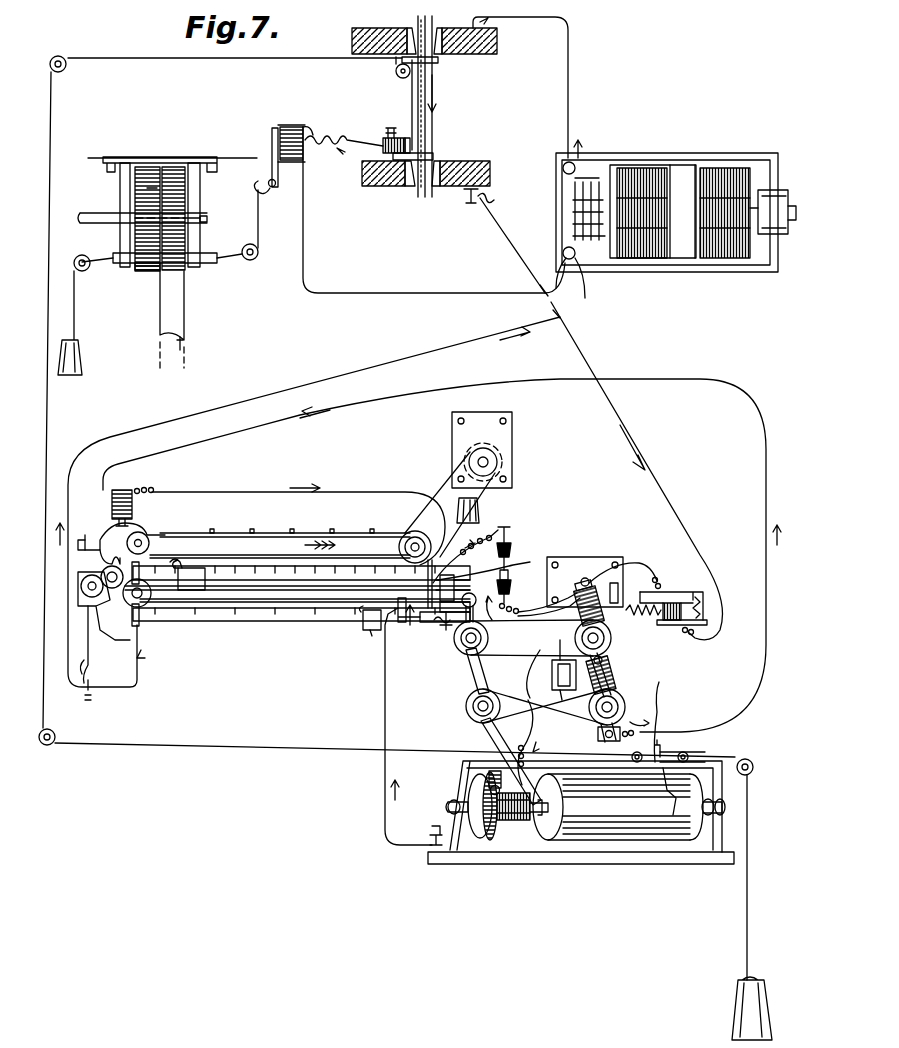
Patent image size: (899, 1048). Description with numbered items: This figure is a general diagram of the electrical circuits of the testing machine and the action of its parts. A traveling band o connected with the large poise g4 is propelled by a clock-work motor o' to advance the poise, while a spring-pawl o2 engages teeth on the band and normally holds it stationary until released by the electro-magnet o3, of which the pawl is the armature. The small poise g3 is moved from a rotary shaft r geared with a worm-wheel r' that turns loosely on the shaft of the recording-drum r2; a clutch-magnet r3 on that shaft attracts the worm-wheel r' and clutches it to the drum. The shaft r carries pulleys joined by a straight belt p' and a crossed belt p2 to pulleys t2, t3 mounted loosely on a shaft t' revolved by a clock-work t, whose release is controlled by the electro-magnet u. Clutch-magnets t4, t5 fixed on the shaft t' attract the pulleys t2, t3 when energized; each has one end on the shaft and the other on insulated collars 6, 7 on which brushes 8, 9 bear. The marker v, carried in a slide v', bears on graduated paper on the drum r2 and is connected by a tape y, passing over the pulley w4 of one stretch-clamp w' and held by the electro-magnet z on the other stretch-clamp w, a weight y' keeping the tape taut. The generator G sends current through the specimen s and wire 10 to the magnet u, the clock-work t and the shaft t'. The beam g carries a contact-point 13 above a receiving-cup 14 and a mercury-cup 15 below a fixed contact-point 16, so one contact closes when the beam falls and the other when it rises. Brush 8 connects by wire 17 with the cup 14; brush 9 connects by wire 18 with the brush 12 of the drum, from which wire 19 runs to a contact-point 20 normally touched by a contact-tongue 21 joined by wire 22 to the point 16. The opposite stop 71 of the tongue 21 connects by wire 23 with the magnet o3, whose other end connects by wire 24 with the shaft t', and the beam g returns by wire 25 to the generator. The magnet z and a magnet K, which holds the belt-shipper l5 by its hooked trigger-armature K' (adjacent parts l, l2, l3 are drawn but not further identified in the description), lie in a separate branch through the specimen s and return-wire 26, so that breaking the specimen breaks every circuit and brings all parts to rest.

The tape y is at (389, 518).
The weight y' is at (762, 1008).
The lever mechanism l is at (167, 226).
The rod l2 is at (183, 319).
The rod extension l3 is at (192, 337).
The belt-shipper l5 is at (225, 240).
The shipper-magnet K is at (325, 132).
The hooked trigger-armature K' is at (257, 161).
The specimen s is at (460, 106).
The stretch-clamp w' is at (427, 60).
The pulley w4 is at (398, 78).
The stretch-clamp w is at (422, 148).
The tape-magnet z is at (406, 140).
The generator G is at (676, 216).
The return-wire 26 is at (434, 210).
The wire 10 is at (596, 414).
The return-wire 25 is at (314, 510).
The wire 24 is at (442, 555).
The wire 23 is at (298, 524).
The releasing electro-magnet o3 is at (133, 507).
The spring-pawl o2 is at (137, 530).
The traveling band o is at (290, 541).
The clock-work motor o' is at (467, 484).
The beam g is at (274, 631).
The small poise g3 is at (370, 621).
The large poise g4 is at (190, 574).
The contact-tongue 21 is at (424, 578).
The contact-point 20 is at (430, 625).
The stop point 71 is at (437, 630).
The wire 22 is at (481, 551).
The fixed contact-point 16 is at (510, 528).
The mercury-cup 15 is at (514, 550).
The contact-point 13 is at (515, 576).
The receiving-cup 14 is at (514, 588).
The wire 17 is at (502, 616).
The brush 8 is at (549, 604).
The clock-work t is at (585, 582).
The insulated collar 6 is at (621, 580).
The clutch electro-magnet t4 is at (602, 616).
The pulley t2 is at (611, 640).
The rotary shaft t' is at (613, 675).
The insulated collar 7 is at (606, 662).
The clutch electro-magnet t5 is at (614, 680).
The pulley t3 is at (625, 706).
The releasing electro-magnet u is at (675, 592).
The straight belt p' is at (523, 624).
The rotary shaft r is at (494, 726).
The crossed belt p2 is at (536, 707).
The brush 9 is at (551, 670).
The wire 18 is at (539, 742).
The wire 19 is at (404, 733).
The recording-drum r2 is at (581, 812).
The worm-wheel r' is at (476, 812).
The clutch-magnet r3 is at (512, 822).
The brush 12 is at (518, 788).
The marker v is at (653, 746).
The marking-slide v' is at (684, 722).